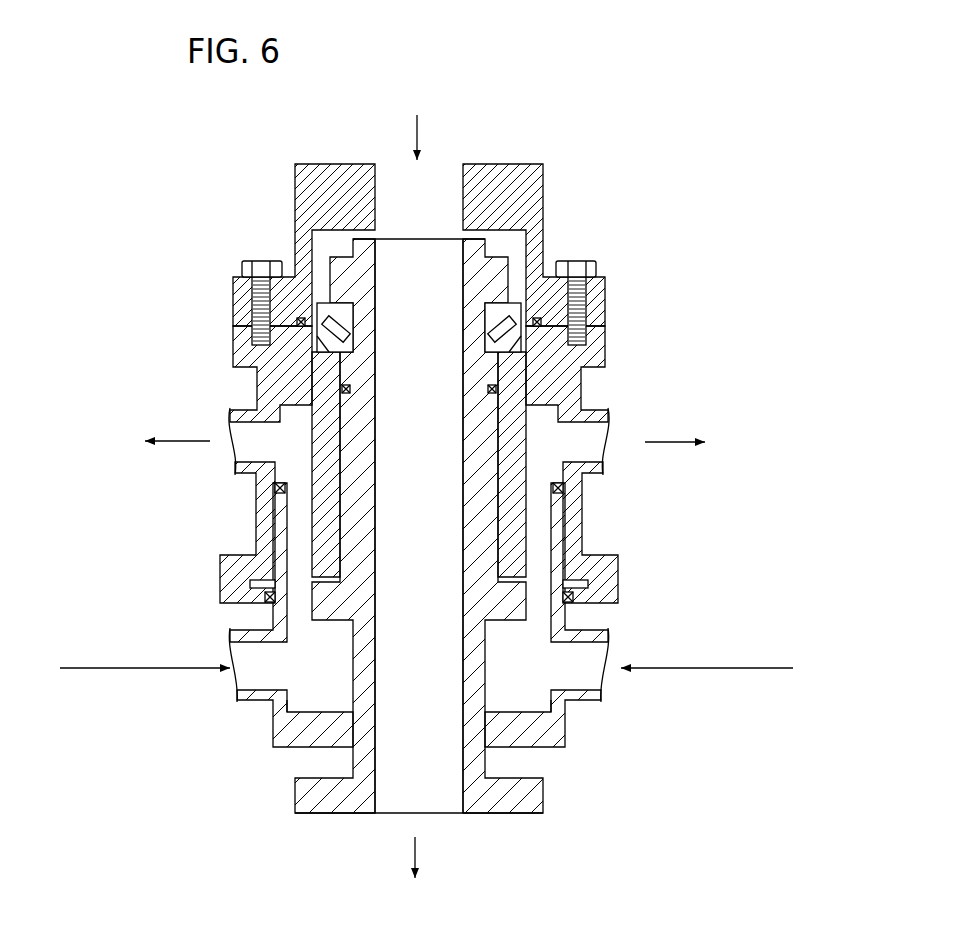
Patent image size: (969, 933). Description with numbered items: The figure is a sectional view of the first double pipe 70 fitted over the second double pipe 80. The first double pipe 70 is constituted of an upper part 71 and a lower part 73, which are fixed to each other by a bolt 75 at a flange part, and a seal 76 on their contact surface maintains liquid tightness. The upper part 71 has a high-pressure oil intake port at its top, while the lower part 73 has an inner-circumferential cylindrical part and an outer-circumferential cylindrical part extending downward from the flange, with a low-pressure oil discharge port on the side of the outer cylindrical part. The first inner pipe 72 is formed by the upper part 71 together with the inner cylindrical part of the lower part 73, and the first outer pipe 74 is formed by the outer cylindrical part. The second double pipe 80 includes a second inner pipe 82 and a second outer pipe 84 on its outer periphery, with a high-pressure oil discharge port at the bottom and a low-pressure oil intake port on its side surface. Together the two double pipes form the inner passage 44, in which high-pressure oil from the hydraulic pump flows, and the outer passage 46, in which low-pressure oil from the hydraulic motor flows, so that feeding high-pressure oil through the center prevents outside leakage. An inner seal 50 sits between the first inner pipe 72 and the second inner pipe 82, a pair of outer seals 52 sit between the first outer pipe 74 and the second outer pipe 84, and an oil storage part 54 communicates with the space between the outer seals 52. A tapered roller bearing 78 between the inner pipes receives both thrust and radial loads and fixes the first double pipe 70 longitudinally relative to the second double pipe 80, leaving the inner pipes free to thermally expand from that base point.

The first double pipe 70 is at (221, 226).
The upper part 71 is at (606, 290).
The first inner pipe 72 is at (528, 452).
The lower part 73 is at (606, 350).
The first outer pipe 74 is at (584, 515).
The bolt 75 is at (258, 261).
The seal 76 is at (300, 318).
The tapered roller bearing 78 is at (356, 322).
The inner passage 44 is at (437, 255).
The inner seal 50 is at (352, 388).
The outer seals 52 is at (283, 484).
The oil storage part 54 is at (250, 584).
The second outer pipe 84 is at (566, 603).
The outer passage 46 is at (290, 657).
The second double pipe 80 is at (240, 792).
The second inner pipe 82 is at (376, 600).